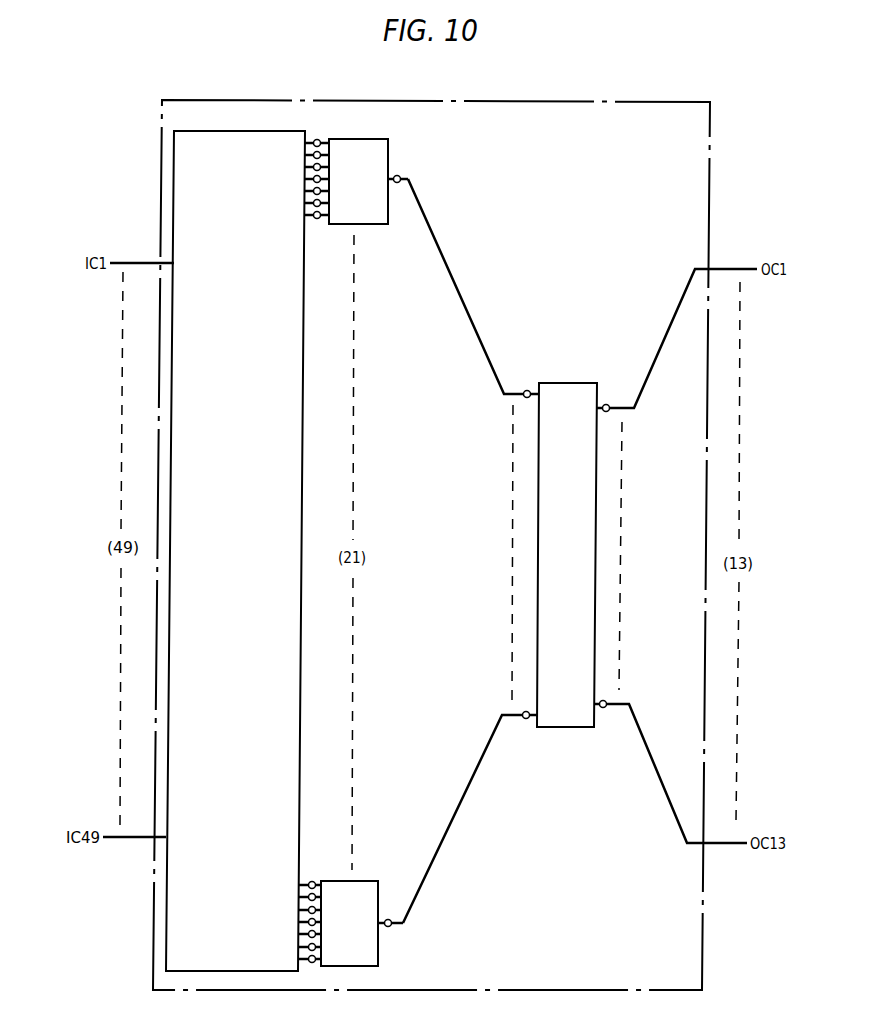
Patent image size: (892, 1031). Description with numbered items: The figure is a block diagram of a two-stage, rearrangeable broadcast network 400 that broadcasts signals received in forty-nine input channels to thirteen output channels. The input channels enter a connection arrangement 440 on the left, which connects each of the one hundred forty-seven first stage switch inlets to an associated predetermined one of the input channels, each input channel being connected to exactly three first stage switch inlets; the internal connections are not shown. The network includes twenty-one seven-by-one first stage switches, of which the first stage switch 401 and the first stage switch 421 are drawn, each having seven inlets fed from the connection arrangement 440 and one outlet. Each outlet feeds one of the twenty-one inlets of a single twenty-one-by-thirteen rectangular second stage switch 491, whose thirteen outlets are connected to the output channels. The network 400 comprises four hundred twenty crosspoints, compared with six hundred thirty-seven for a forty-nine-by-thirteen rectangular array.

The two-stage rearrangeable broadcast network 400 is at (652, 95).
The connection arrangement 440 is at (240, 131).
The first stage switch 401 is at (353, 139).
The first stage switch 421 is at (351, 881).
The second stage switch 491 is at (562, 383).